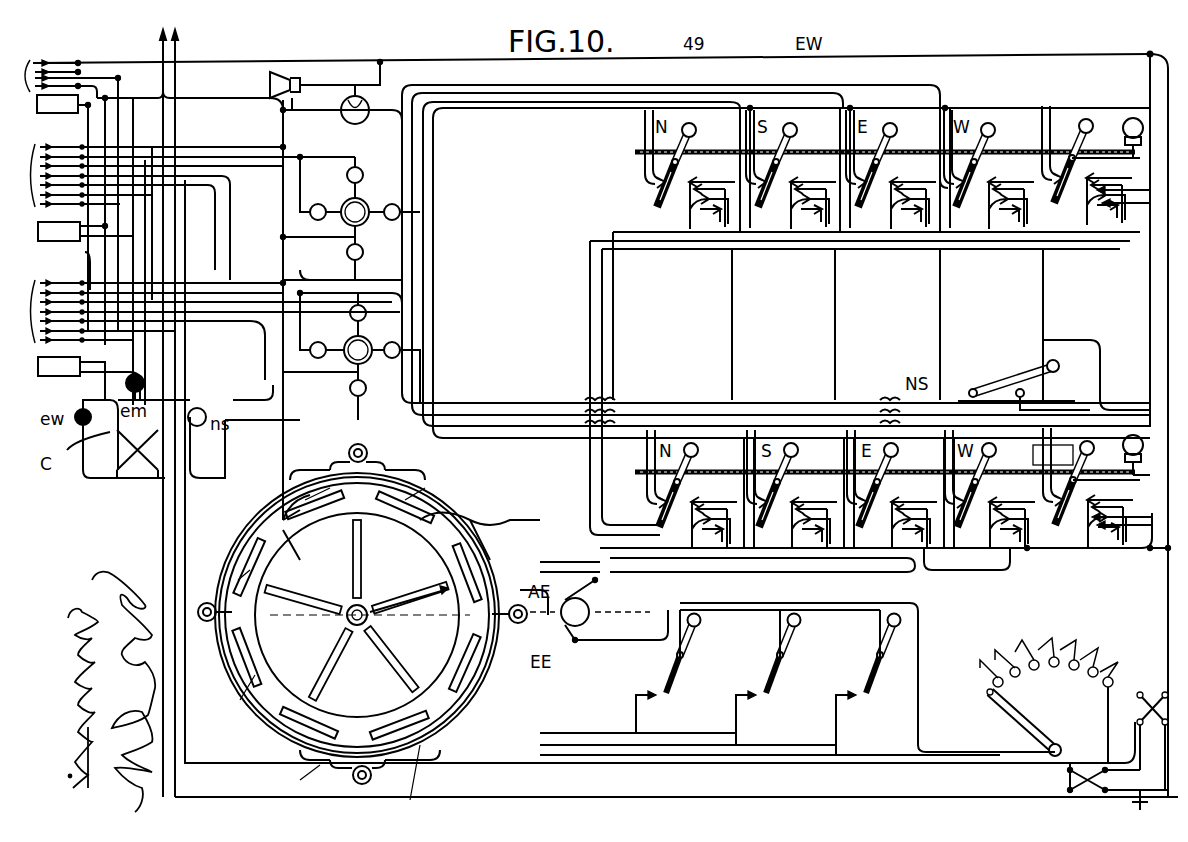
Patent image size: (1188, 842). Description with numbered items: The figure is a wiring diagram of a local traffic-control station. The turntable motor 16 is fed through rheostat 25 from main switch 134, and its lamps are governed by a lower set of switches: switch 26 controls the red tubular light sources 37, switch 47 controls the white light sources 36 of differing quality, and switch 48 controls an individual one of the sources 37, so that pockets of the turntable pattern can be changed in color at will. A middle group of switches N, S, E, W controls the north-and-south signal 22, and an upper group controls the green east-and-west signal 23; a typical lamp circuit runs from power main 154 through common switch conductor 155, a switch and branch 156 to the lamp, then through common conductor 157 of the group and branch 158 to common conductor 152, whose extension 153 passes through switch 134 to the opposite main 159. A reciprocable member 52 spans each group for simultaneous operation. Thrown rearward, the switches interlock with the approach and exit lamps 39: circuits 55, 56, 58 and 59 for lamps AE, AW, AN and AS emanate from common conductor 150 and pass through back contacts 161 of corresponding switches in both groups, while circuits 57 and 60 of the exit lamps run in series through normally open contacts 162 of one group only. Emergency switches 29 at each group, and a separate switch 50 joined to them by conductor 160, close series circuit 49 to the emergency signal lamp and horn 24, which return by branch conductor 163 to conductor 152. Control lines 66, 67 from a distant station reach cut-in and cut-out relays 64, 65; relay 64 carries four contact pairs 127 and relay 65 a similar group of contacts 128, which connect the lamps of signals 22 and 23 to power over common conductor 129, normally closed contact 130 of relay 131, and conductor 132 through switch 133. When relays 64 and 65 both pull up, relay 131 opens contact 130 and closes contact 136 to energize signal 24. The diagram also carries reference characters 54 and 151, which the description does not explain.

The normally closed contact 130 is at (73, 63).
The normally opened contact 136 is at (50, 62).
The relay 131 is at (64, 212).
The group of contacts 128 is at (166, 199).
The conductor 132 is at (118, 122).
The common conductor 163 is at (108, 214).
The cut-in and cut-out relay 65 is at (85, 283).
The common conductor 129 is at (85, 252).
The bank of four contact pairs 127 is at (176, 321).
The cut-in and cut-out relay 64 is at (89, 378).
The main switch 134 is at (35, 370).
The emergency signal 24 is at (285, 75).
The east and west traffic control signal 23 is at (716, 261).
The common conductor 157 is at (368, 205).
The branch 158 is at (283, 235).
The common conductor 152 is at (283, 250).
The north and south traffic signal 22 is at (383, 327).
The reciprocable member 52 is at (635, 155).
The back contacts 161 is at (840, 329).
The normally open contacts 162 is at (830, 328).
The emergency signal control switch 29 is at (1085, 112).
The lamp 54 is at (1125, 105).
The common switch conductor 155 is at (1012, 108).
The branch 156 is at (527, 113).
The series circuit 49 is at (1150, 272).
The circuit of exit control lamps 57 is at (650, 250).
The circuit 56 is at (590, 276).
The circuit 55 is at (590, 310).
The common conductor 150 is at (815, 250).
The circuit 58 is at (732, 335).
The circuit 59 is at (835, 335).
The conductor 160 is at (1168, 315).
The control switch 50 is at (1000, 385).
The series circuit 60 is at (580, 610).
The motor 16 is at (588, 610).
The switch 48 is at (693, 633).
The switch 26 is at (792, 642).
The switch 47 is at (878, 633).
The rheostat 25 is at (1012, 712).
The opposite main 159 is at (1165, 740).
The branch 153 is at (843, 765).
The switch 133 is at (1123, 792).
The power main 154 is at (1168, 585).
The lamps 39 is at (250, 570).
The hub 151 is at (364, 605).
The light sources 37 is at (364, 555).
The light sources 36 is at (370, 609).
The control line 67 is at (163, 40).
The control line 66 is at (175, 40).